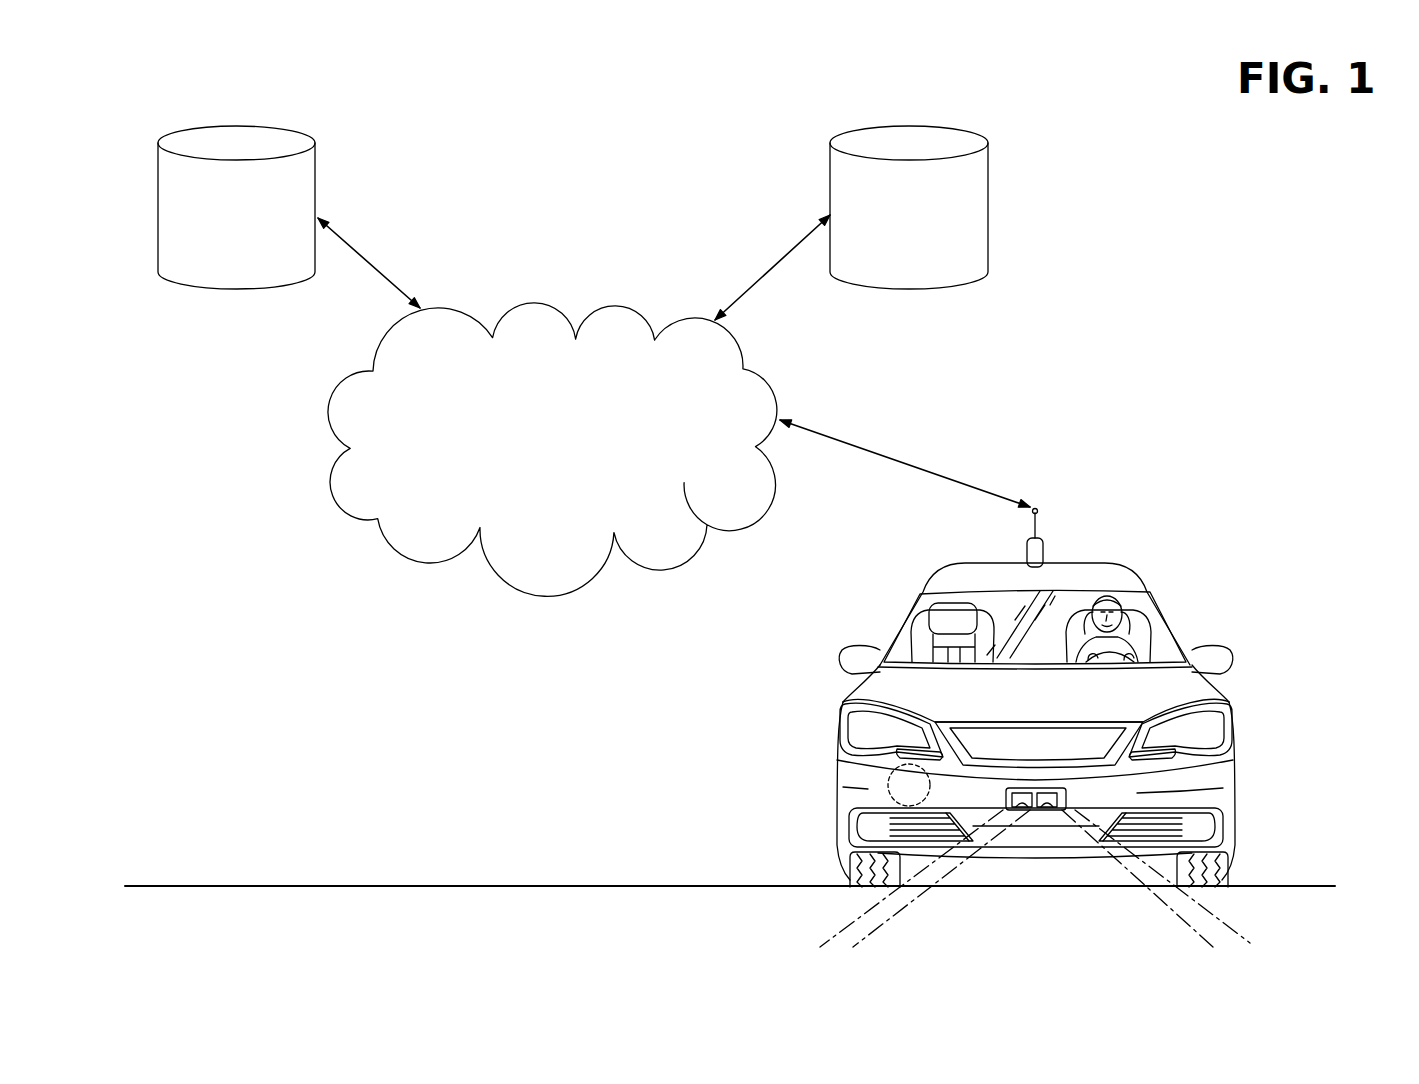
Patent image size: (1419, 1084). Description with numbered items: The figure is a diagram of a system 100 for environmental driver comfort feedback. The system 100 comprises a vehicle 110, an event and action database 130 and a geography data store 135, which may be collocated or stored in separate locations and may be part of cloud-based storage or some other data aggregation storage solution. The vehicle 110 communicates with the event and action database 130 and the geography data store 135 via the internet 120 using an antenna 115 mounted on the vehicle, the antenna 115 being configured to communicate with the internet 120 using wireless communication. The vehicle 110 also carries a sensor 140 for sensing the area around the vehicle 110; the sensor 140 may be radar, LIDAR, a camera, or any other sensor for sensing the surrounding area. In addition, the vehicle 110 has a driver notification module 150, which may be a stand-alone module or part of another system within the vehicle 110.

The system 100 is at (442, 140).
The vehicle 110 is at (1240, 737).
The antenna 115 is at (1046, 551).
The internet 120 is at (550, 302).
The event and action database 130 is at (987, 207).
The geography data store 135 is at (235, 125).
The sensor 140 is at (1036, 788).
The driver notification module 150 is at (888, 786).